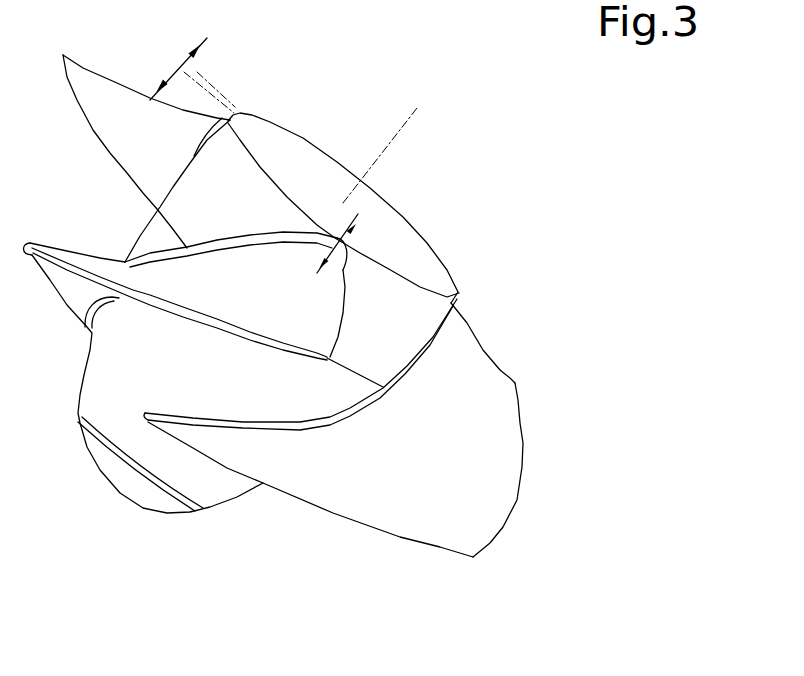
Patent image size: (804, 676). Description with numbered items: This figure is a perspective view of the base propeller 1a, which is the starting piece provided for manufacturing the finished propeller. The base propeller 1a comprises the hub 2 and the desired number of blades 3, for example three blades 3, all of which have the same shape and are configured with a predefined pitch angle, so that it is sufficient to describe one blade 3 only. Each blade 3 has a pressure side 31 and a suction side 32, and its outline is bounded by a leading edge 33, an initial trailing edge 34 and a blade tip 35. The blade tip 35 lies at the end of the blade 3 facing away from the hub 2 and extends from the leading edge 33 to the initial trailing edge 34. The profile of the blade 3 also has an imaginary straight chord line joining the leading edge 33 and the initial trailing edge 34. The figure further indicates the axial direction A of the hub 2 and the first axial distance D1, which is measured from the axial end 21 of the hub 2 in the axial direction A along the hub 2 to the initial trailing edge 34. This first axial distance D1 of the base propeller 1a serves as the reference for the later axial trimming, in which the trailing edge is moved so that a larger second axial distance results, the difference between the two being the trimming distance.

The base propeller 1a is at (532, 80).
The hub 2 is at (457, 313).
The axial end 21 is at (417, 232).
The blade 3 is at (470, 458).
The pressure side 31 is at (123, 208).
The suction side 32 is at (100, 147).
The leading edge 33 is at (332, 513).
The initial trailing edge 34 is at (485, 350).
The blade tip 35 is at (515, 503).
The first axial distance D1 is at (213, 117).
The axial direction A is at (380, 146).